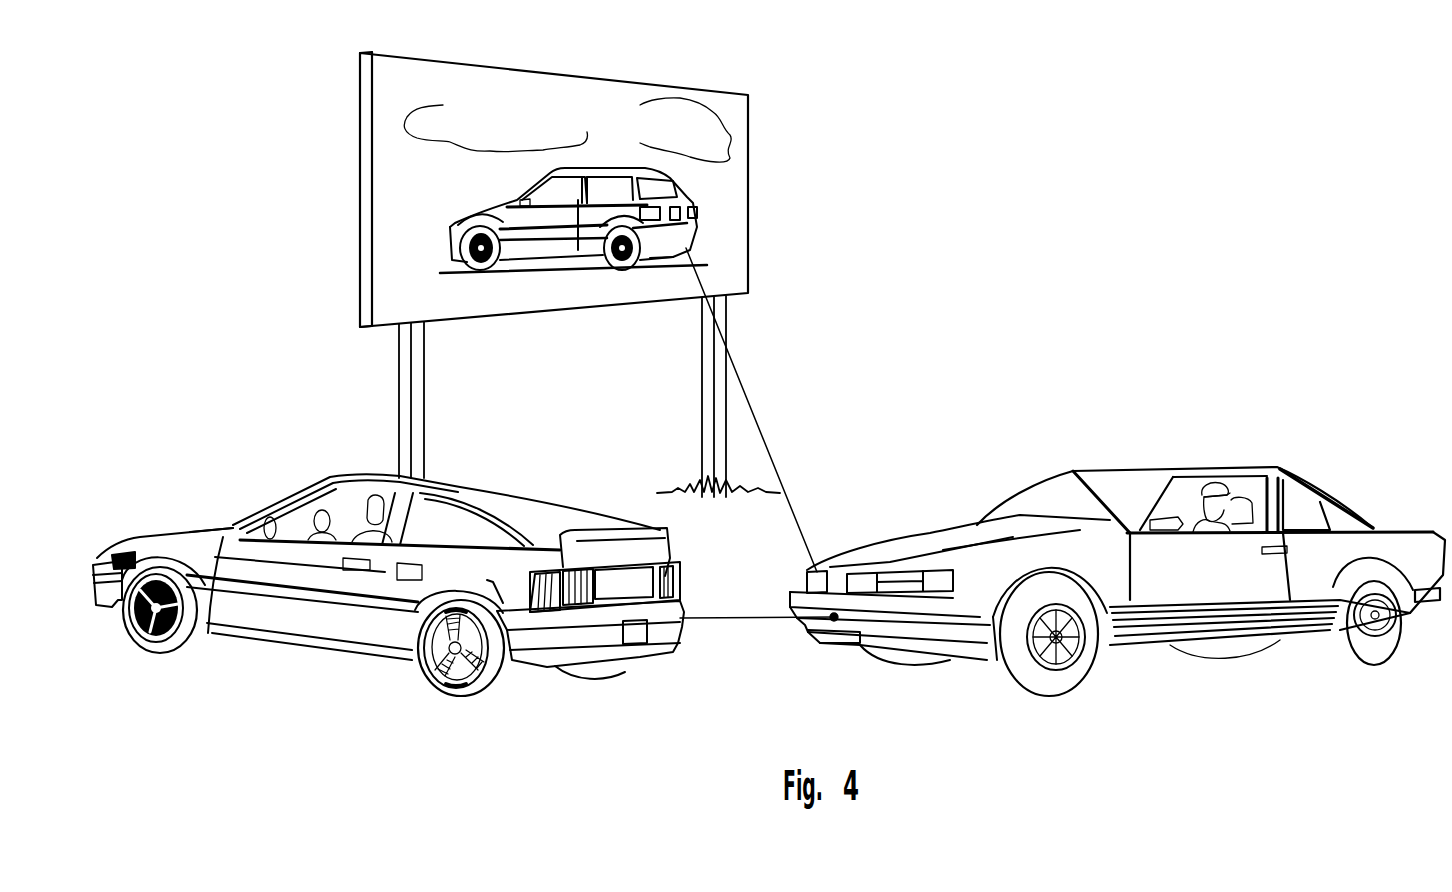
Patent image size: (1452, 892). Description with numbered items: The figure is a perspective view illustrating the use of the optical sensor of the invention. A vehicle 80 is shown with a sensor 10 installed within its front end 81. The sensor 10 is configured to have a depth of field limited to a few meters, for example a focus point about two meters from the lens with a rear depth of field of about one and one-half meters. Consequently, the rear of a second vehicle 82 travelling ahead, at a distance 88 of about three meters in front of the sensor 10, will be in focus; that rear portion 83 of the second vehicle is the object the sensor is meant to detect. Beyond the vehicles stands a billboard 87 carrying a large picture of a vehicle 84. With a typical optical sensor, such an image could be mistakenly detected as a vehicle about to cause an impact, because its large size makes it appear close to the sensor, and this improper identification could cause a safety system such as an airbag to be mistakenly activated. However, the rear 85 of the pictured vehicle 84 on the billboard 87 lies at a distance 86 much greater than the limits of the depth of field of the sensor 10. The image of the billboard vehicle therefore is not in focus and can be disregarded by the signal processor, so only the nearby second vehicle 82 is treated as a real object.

The sensor 10 is at (838, 619).
The vehicle 80 is at (1136, 465).
The front end 81 is at (843, 565).
The second vehicle 82 is at (436, 472).
The rear of preceding vehicle 83 is at (637, 543).
The vehicle 84 is at (487, 210).
The rear 85 is at (682, 212).
The distance 86 is at (773, 452).
The billboard 87 is at (725, 101).
The distance 88 is at (745, 620).